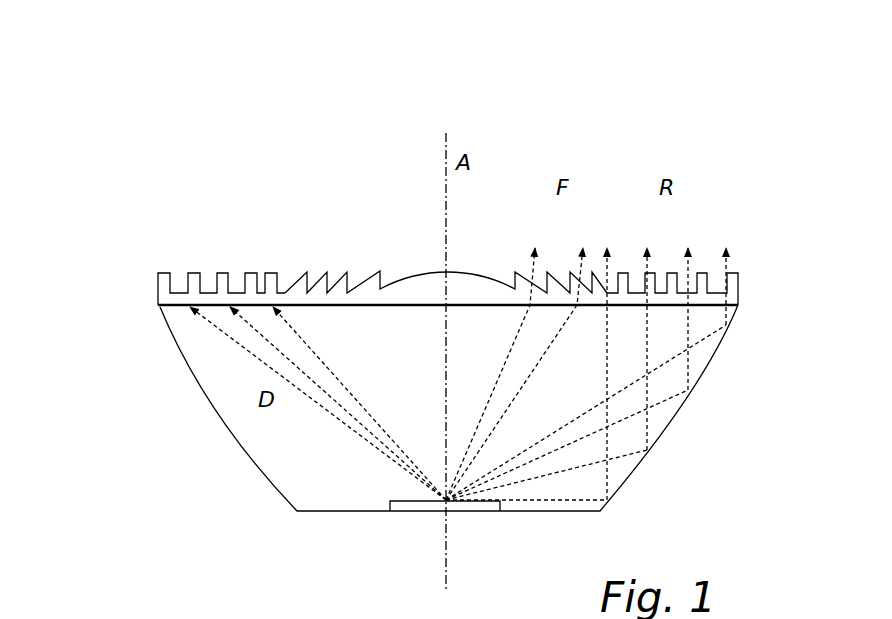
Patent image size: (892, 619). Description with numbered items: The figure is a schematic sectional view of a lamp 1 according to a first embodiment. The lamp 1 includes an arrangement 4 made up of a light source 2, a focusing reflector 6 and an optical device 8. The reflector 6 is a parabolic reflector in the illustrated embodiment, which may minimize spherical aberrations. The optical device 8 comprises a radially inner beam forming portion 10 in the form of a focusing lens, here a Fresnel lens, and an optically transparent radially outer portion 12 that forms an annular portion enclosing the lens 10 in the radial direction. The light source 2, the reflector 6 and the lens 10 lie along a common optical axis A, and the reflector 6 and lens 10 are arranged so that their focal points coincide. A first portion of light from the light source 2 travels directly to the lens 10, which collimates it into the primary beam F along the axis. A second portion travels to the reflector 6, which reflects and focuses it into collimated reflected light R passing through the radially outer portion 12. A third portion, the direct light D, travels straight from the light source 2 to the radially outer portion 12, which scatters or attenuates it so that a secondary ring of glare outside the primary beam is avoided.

The lamp 1 is at (672, 86).
The light source 2 is at (465, 511).
The arrangement 4 is at (55, 235).
The focusing reflector 6 is at (220, 413).
The optical device 8 is at (256, 252).
The radially inner beam forming portion 10 is at (337, 283).
The radially outer portion 12 is at (213, 290).